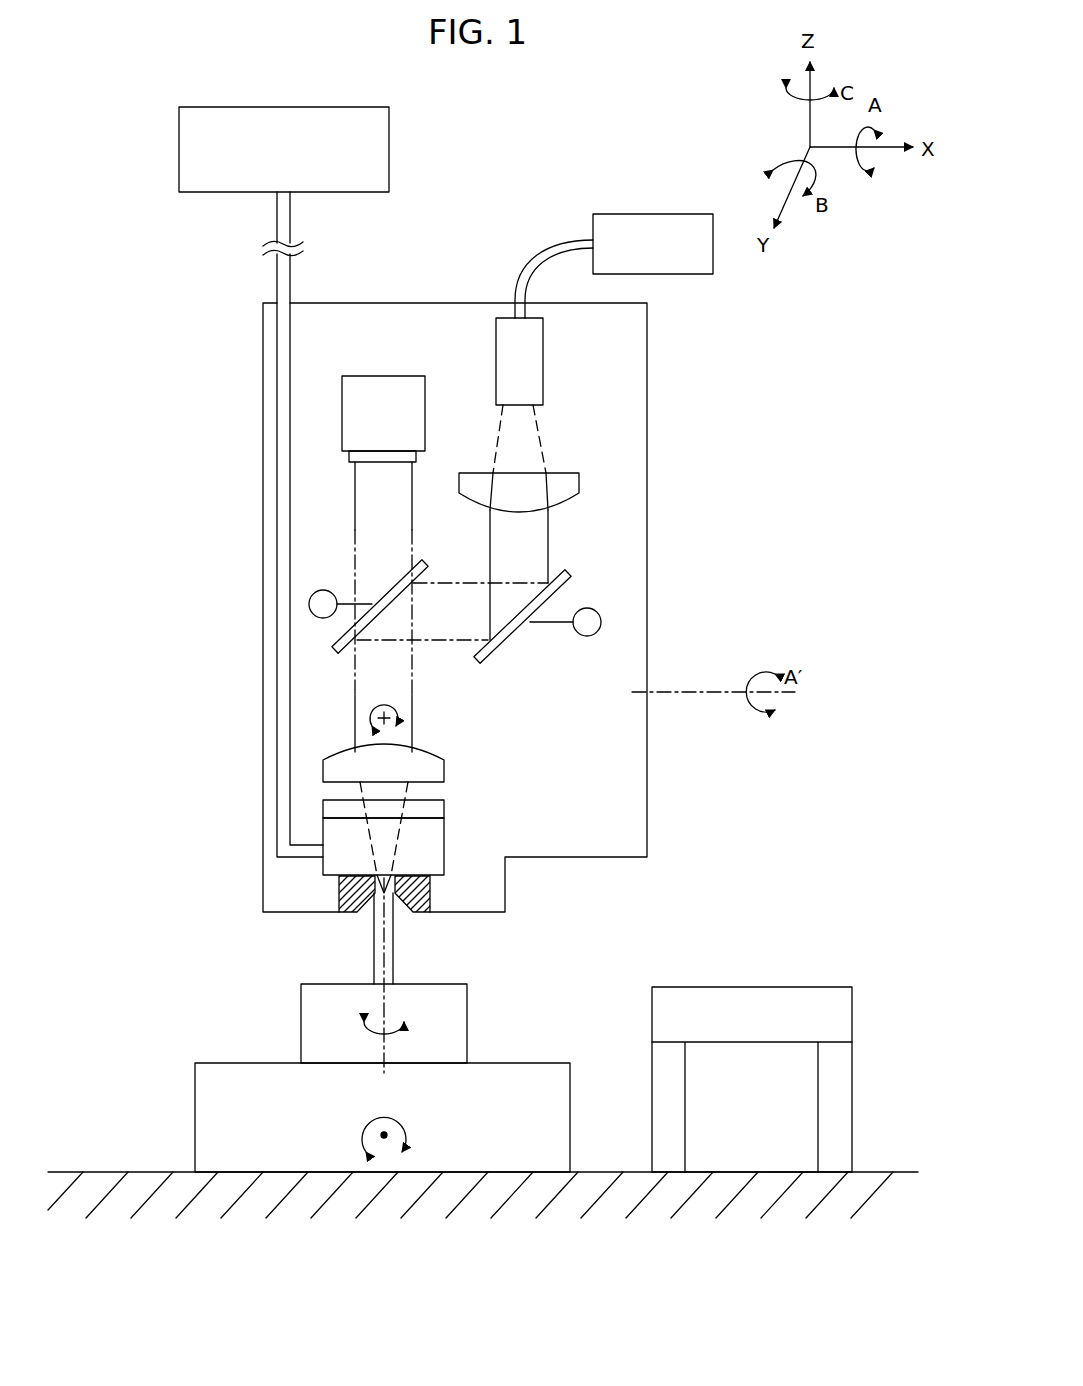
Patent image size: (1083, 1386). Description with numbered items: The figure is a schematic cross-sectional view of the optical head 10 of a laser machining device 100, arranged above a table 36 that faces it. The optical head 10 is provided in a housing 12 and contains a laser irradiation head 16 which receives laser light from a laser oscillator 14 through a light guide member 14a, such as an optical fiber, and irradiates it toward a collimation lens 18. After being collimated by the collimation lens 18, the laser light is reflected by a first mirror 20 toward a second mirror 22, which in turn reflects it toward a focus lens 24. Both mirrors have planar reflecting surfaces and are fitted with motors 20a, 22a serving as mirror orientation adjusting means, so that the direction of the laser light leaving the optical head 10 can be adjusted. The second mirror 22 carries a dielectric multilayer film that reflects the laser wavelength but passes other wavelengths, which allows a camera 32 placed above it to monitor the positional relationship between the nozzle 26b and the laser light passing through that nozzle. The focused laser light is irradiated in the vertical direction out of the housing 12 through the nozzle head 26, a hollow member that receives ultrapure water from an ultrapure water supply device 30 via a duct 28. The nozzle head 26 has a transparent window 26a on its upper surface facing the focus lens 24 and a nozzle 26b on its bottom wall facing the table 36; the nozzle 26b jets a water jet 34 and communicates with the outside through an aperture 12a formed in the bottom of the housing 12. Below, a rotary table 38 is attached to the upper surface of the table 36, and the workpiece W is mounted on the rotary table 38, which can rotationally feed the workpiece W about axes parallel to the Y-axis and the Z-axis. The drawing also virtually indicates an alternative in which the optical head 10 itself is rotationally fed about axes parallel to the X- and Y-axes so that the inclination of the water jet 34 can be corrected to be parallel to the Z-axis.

The optical head 10 is at (450, 563).
The housing 12 is at (263, 342).
The aperture 12a is at (365, 913).
The laser oscillator 14 is at (660, 214).
The light guide member 14a is at (561, 238).
The laser irradiation head 16 is at (543, 372).
The collimation lens 18 is at (577, 473).
The first mirror 20 is at (565, 572).
The motor 20a is at (601, 621).
The second mirror 22 is at (405, 568).
The motor 22a is at (309, 600).
The focus lens 24 is at (436, 755).
The nozzle head 26 is at (446, 835).
The window 26a is at (446, 805).
The nozzle 26b is at (386, 898).
The duct 28 is at (290, 283).
The ultrapure water supply device 30 is at (179, 152).
The camera 32 is at (402, 376).
The water jet 34 is at (395, 955).
The table 36 is at (105, 1170).
The rotary table 38 is at (208, 1093).
The laser processing apparatus 100 is at (483, 684).
The workpiece W is at (320, 1008).